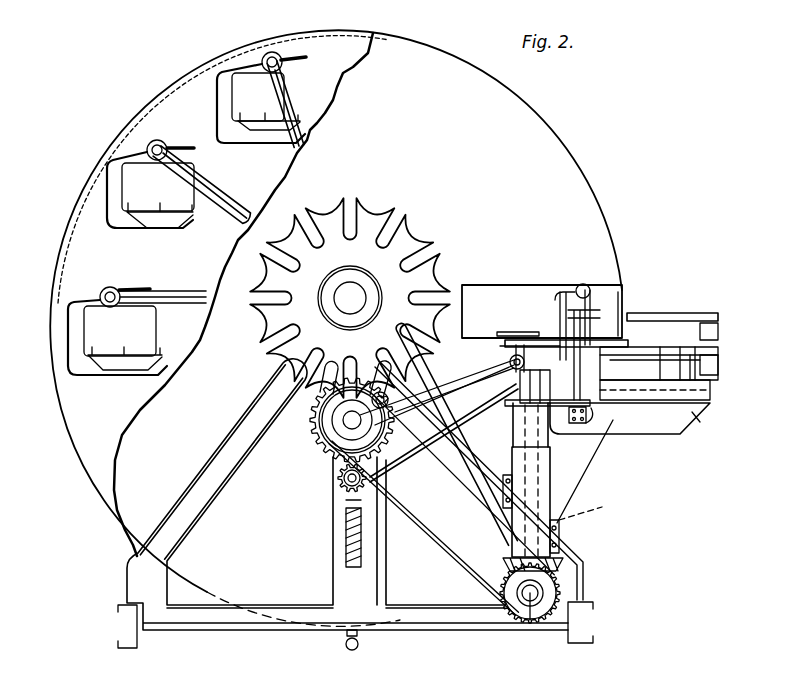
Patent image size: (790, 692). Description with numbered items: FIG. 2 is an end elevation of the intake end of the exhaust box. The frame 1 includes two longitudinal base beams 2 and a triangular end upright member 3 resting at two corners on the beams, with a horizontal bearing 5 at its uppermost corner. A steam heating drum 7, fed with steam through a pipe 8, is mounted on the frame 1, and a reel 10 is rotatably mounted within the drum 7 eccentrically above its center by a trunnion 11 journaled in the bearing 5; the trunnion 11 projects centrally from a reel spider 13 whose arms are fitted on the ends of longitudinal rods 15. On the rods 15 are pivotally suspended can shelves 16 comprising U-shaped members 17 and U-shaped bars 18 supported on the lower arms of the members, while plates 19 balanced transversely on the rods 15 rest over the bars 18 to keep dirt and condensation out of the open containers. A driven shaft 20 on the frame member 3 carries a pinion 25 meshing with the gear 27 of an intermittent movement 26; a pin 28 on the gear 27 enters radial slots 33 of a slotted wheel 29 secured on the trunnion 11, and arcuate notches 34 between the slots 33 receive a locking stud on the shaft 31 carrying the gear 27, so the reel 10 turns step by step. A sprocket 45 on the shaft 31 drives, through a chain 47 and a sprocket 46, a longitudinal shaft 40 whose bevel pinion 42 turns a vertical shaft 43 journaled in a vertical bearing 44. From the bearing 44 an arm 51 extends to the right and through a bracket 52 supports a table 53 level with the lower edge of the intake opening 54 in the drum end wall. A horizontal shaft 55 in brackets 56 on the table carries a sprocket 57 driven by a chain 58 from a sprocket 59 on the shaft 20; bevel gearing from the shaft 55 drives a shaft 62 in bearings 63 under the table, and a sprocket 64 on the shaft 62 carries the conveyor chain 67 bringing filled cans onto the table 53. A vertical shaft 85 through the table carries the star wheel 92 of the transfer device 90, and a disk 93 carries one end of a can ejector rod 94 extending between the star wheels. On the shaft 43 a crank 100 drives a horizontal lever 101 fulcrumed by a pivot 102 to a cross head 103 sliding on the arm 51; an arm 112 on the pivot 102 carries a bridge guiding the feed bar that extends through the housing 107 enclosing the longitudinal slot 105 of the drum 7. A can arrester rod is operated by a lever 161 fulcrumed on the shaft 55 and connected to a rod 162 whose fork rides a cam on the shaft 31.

The frame 1 is at (347, 506).
The longitudinal base beams 2 is at (120, 624).
The triangular end upright member 3 is at (346, 555).
The horizontal bearing 5 is at (373, 308).
The steam heating drum 7 is at (560, 153).
The pipe 8 is at (350, 650).
The reel 10 is at (232, 206).
The trunnion 11 is at (356, 298).
The reel spider 13 is at (214, 228).
The longitudinal rods 15 is at (275, 52).
The can shelves 16 is at (184, 214).
The U-shaped members 17 is at (108, 190).
The U-shaped bars 18 is at (240, 119).
The plates 19 is at (302, 56).
The driven shaft 20 is at (342, 478).
The pinion 25 is at (340, 488).
The intermittent movement 26 is at (312, 408).
The gear 27 is at (344, 426).
The pin 28 is at (383, 390).
The slotted wheel 29 is at (272, 325).
The shaft 31 is at (345, 430).
The radial slots 33 is at (318, 208).
The arcuate notches 34 is at (263, 262).
The shaft 40 is at (536, 593).
The bevel pinion 42 is at (562, 562).
The vertical shaft 43 is at (565, 514).
The vertical bearing 44 is at (550, 490).
The sprocket 45 is at (340, 421).
The sprocket 46 is at (531, 612).
The chain 47 is at (493, 517).
The arm 51 is at (650, 420).
The bracket 52 is at (586, 426).
The table 53 is at (640, 314).
The intake opening 54 is at (520, 292).
The horizontal shaft 55 is at (512, 370).
The brackets 56 is at (510, 355).
The sprocket 57 is at (482, 362).
The chain 58 is at (437, 442).
The sprocket 59 is at (345, 500).
The shaft 62 is at (537, 382).
The bearings 63 is at (596, 348).
The sprocket 64 is at (596, 336).
The conveyor chain 67 is at (655, 388).
The vertical shaft 85 is at (591, 299).
The transfer device 90 is at (578, 355).
The star wheel 92 is at (563, 294).
The disk 93 is at (512, 331).
The can ejector rod 94 is at (622, 292).
The crank 100 is at (573, 426).
The horizontal lever 101 is at (642, 372).
The pivot 102 is at (696, 420).
The cross head 103 is at (616, 402).
The longitudinal slot 105 is at (662, 318).
The housing 107 is at (704, 323).
The arm 112 is at (684, 346).
The lever 161 is at (534, 410).
The rod 162 is at (454, 398).